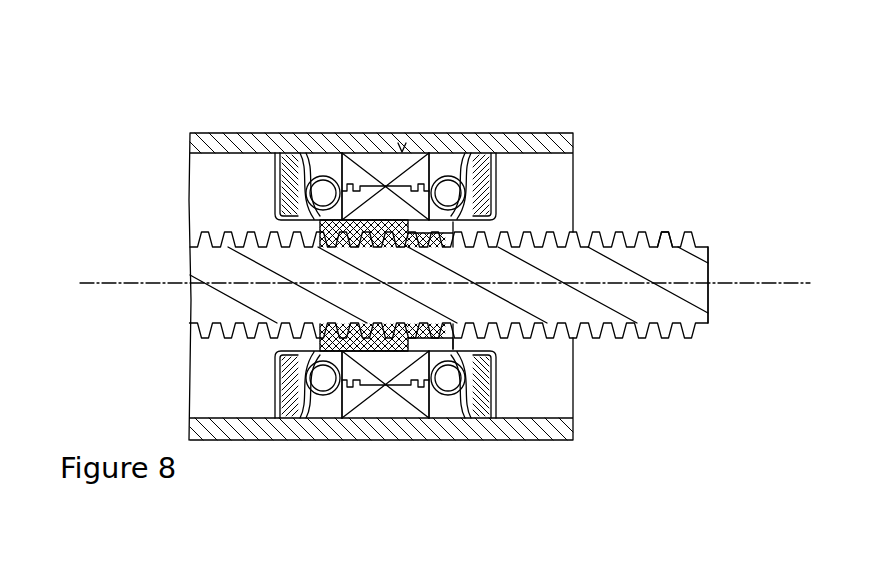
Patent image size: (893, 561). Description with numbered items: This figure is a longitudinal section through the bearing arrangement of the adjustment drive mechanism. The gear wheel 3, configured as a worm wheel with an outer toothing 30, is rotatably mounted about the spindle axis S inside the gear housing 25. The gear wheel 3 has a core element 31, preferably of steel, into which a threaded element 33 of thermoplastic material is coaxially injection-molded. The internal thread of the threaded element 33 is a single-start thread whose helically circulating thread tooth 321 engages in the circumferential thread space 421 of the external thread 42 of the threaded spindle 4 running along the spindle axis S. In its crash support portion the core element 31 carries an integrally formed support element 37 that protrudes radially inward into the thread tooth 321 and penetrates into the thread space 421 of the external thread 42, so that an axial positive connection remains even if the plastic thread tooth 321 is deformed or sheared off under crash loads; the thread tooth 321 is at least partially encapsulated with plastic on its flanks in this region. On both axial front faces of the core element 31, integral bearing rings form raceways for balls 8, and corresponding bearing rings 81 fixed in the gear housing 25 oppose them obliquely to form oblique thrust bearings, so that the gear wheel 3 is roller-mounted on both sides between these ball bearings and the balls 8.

The gear wheel 3 is at (402, 150).
The threaded spindle 4 is at (625, 255).
The balls 8 is at (323, 188).
The gear housing 25 is at (538, 150).
The toothing 30 is at (415, 157).
The core element 31 is at (373, 185).
The threaded element 33 is at (318, 227).
The support element 37 is at (453, 337).
The external thread 42 is at (683, 337).
The bearing rings 81 is at (303, 152).
The thread tooth 321 is at (330, 336).
The thread space 421 is at (657, 243).
The spindle axis S is at (757, 282).